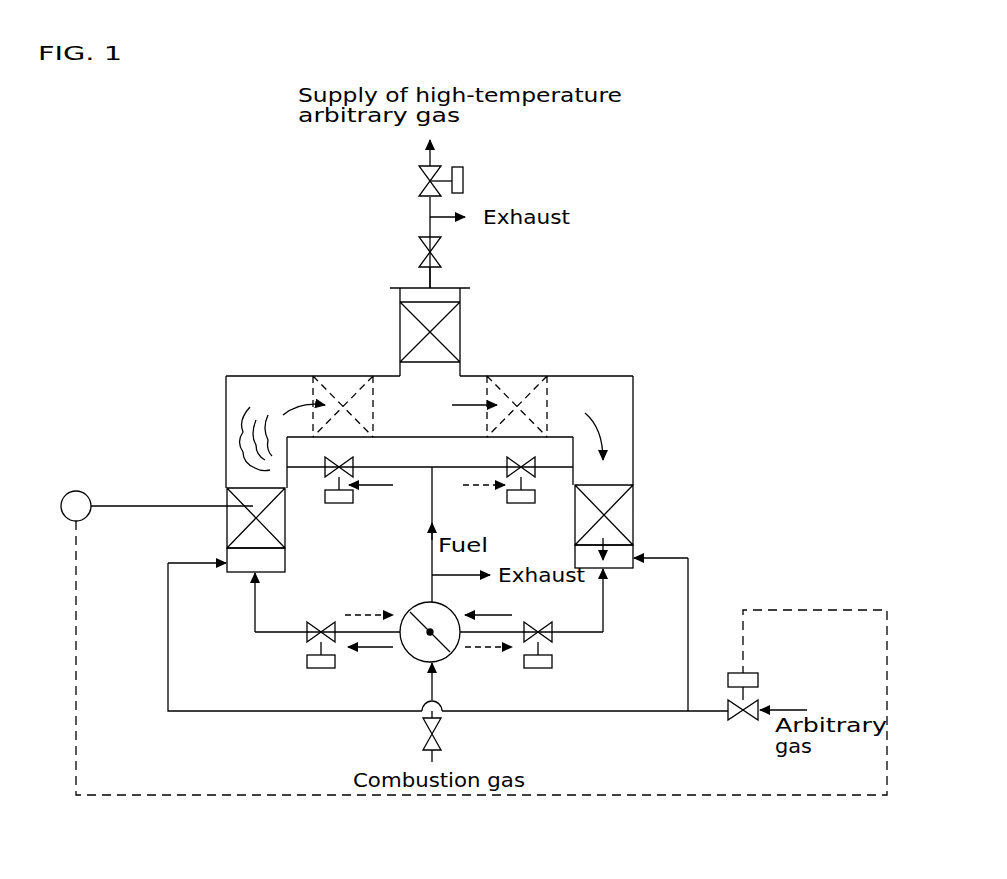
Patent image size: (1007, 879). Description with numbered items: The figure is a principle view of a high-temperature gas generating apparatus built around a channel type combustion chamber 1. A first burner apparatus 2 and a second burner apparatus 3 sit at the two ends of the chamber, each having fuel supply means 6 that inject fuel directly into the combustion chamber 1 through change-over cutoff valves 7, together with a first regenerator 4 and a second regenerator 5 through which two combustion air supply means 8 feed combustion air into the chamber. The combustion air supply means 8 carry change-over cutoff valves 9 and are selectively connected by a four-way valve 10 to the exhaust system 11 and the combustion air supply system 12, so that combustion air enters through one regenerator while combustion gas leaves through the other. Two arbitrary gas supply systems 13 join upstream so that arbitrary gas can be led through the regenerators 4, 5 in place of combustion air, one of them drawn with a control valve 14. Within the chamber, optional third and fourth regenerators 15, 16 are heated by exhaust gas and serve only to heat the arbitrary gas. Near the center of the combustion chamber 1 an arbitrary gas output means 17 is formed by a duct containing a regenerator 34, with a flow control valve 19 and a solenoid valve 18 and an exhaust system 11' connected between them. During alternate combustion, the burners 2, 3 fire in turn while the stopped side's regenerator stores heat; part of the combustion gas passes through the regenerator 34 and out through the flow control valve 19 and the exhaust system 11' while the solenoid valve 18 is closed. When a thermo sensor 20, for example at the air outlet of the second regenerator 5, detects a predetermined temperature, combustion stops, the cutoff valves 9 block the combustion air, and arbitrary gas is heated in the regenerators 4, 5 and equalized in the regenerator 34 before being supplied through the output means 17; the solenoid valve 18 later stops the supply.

The combustion chamber 1 is at (477, 380).
The first burner apparatus 2 is at (656, 532).
The second burner apparatus 3 is at (216, 530).
The first regenerator 4 is at (623, 512).
The second regenerator 5 is at (278, 527).
The fuel supply means 6 is at (307, 470).
The cutoff valve 7 is at (345, 505).
The combustion air supply means 8 is at (257, 610).
The change-over cutoff valve 9 is at (318, 620).
The four-way valve 10 is at (420, 660).
The exhaust system 11 is at (437, 534).
The exhaust system 11' is at (477, 244).
The combustion air supply system 12 is at (435, 757).
The arbitrary gas supply system 13 is at (186, 561).
The arbitrary gas control valve 14 is at (761, 680).
The third regenerator 15 is at (524, 392).
The fourth regenerator 16 is at (343, 392).
The arbitrary gas output means 17 is at (428, 279).
The solenoid valve 18 is at (463, 178).
The flow control valve 19 is at (419, 243).
The thermo sensor 20 is at (86, 492).
The regenerator 34 is at (410, 322).